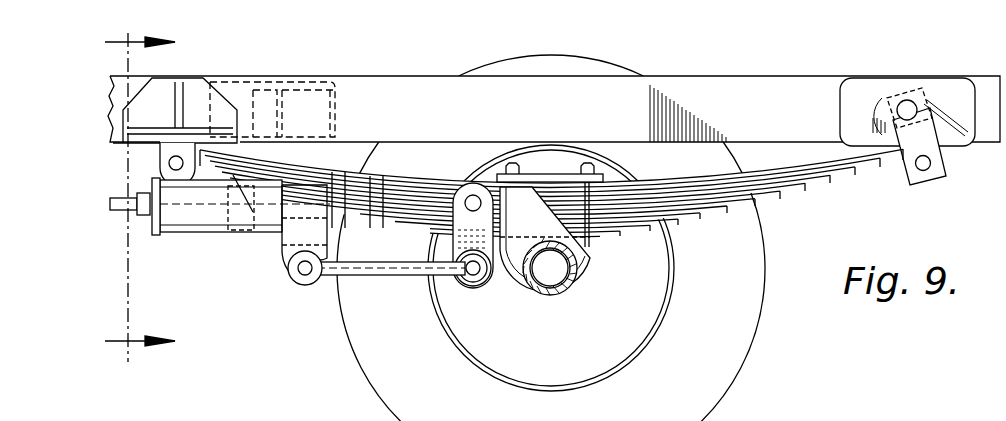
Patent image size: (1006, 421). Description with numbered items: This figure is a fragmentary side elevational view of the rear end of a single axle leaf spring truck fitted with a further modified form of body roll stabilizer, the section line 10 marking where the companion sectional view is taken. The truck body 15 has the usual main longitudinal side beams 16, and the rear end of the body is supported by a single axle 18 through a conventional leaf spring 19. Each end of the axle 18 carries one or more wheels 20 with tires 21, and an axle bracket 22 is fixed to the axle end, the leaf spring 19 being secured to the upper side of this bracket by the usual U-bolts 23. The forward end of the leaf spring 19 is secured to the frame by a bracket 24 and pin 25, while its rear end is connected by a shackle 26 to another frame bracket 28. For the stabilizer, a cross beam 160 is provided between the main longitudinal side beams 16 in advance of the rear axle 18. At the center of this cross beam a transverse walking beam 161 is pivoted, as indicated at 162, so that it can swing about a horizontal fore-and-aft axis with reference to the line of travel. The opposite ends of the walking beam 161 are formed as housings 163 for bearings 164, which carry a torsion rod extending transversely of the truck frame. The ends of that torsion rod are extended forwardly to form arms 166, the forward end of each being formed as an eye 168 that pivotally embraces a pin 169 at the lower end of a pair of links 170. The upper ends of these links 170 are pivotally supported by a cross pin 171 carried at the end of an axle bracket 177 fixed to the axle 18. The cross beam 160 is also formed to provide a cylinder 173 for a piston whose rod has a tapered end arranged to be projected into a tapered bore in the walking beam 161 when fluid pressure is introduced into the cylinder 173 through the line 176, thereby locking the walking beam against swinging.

The section line 10- 10 is at (126, 200).
The truck body 15 is at (762, 68).
The main longitudinal side beams 16 is at (415, 85).
The axle 18 is at (568, 290).
The leaf spring 19 is at (798, 190).
The wheels 20 is at (668, 305).
The tires 21 is at (742, 352).
The axle bracket 22 is at (585, 240).
The U-bolts 23 is at (597, 195).
The bracket 24 is at (190, 90).
The pin 25 is at (160, 163).
The shackle 26 is at (940, 178).
The frame bracket 28 is at (950, 85).
The cross beam 160 is at (330, 52).
The walking beam 161 is at (290, 232).
The pivot 162 is at (228, 212).
The housings 163 is at (288, 273).
The bearings 164 is at (300, 284).
The arms 166 is at (370, 275).
The eye 168 is at (470, 285).
The pin 169 is at (478, 286).
The links 170 is at (455, 235).
The cross pin 171 is at (473, 198).
The cylinder 173 is at (170, 235).
The line 176 is at (115, 212).
The axle bracket 177 is at (533, 203).